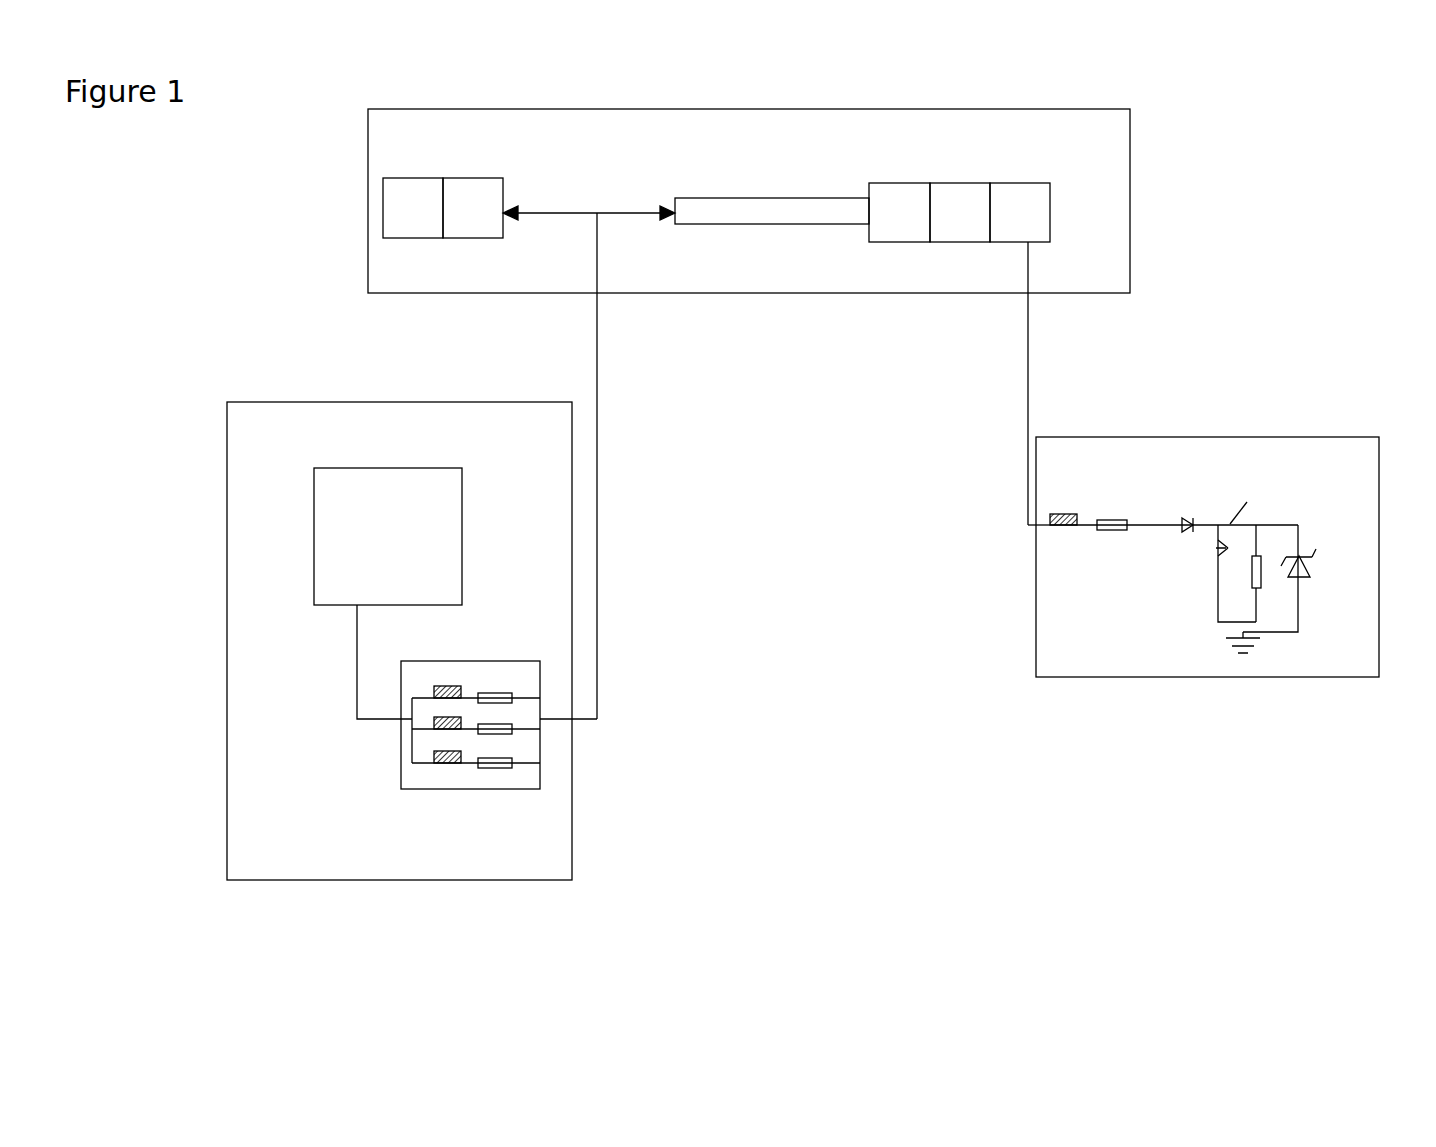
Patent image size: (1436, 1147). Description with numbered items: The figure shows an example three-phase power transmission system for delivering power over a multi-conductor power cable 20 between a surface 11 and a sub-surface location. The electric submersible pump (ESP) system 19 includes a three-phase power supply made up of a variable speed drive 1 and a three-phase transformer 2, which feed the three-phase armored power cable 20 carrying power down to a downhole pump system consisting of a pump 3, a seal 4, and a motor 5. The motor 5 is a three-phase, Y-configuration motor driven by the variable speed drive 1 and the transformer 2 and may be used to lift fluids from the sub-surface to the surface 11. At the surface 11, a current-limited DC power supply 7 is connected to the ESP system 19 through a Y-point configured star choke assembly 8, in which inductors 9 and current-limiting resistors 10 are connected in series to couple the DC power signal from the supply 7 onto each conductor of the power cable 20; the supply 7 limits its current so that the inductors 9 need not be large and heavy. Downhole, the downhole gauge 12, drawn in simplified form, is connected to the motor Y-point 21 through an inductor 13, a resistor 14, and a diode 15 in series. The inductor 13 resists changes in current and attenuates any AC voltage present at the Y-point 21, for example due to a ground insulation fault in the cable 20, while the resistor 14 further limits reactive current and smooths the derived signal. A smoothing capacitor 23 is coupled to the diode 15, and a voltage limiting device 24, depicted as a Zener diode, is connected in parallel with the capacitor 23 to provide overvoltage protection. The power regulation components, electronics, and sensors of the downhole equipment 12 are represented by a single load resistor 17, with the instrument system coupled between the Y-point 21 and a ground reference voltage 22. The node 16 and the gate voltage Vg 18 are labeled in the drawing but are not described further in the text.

The variable speed drive 1 is at (383, 200).
The three-phase transformer 2 is at (463, 178).
The pump 3 is at (895, 183).
The seal 4 is at (955, 183).
The motor 5 is at (1015, 183).
The DC power supply 7 is at (314, 550).
The star choke assembly 8 is at (402, 776).
The inductors 9 is at (440, 768).
The current-limiting resistors 10 is at (500, 770).
The surface 11 is at (572, 808).
The downhole gauge 12 is at (1036, 610).
The inductor 13 is at (1065, 528).
The resistor 14 is at (1110, 530).
The diode 15 is at (1180, 528).
The down hole node 16 is at (1300, 528).
The load resistor 17 is at (1286, 640).
The gate voltage Vg 18 is at (1272, 482).
The ESP system 19 is at (368, 257).
The multi-conductor power cable 20 is at (757, 198).
The Y-point 21 is at (1028, 358).
The ground reference voltage 22 is at (1258, 590).
The smoothing capacitor 23 is at (1214, 552).
The voltage limiting device 24 is at (1310, 578).